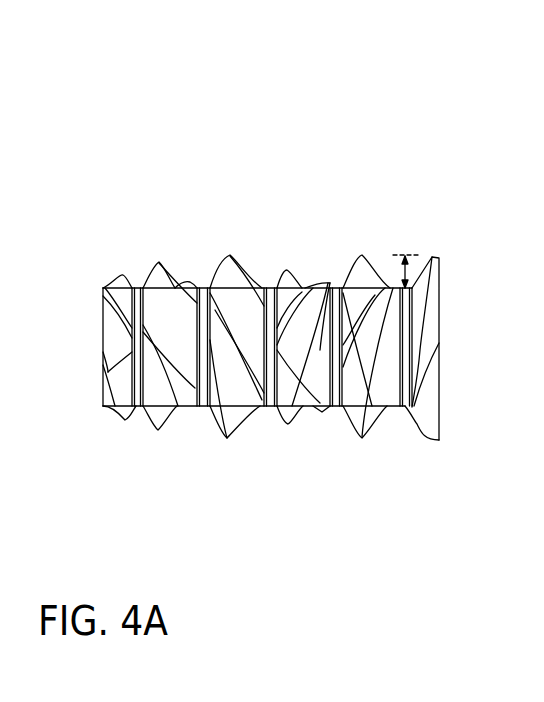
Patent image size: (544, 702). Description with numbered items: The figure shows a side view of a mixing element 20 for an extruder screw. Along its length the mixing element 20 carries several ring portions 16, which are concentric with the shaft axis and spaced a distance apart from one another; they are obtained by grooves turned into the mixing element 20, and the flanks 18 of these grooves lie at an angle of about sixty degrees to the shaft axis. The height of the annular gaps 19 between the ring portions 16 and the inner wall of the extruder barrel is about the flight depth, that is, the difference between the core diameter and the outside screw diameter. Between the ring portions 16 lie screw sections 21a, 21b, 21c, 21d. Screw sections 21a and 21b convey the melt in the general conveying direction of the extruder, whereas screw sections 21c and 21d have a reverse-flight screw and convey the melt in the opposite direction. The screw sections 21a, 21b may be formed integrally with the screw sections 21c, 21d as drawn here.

The ring portions 16 is at (137, 407).
The flanks 18 is at (416, 422).
The annular gaps 19 is at (405, 272).
The mixing element 20 is at (148, 187).
The screw section 21a is at (168, 258).
The screw section 21b is at (233, 247).
The screw section 21c is at (310, 270).
The screw section 21d is at (359, 247).